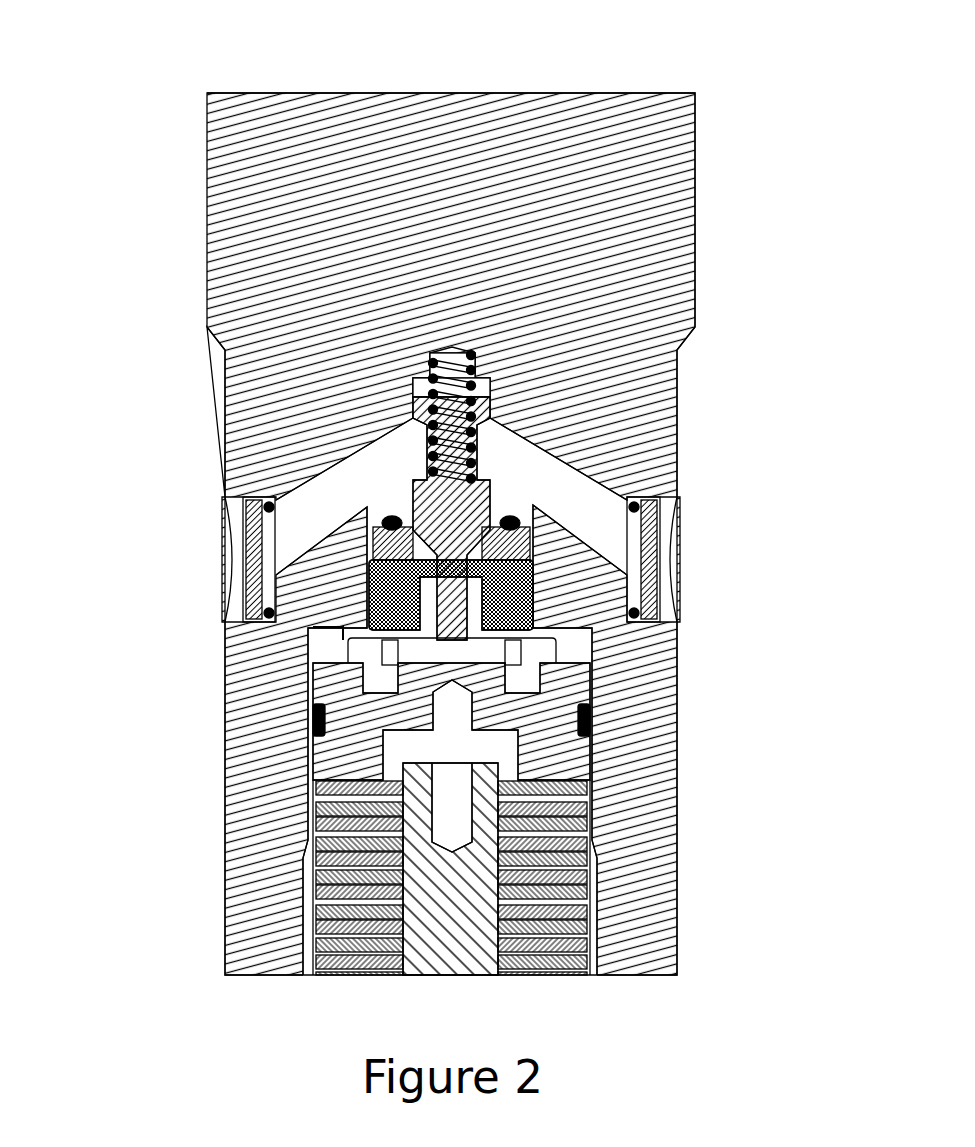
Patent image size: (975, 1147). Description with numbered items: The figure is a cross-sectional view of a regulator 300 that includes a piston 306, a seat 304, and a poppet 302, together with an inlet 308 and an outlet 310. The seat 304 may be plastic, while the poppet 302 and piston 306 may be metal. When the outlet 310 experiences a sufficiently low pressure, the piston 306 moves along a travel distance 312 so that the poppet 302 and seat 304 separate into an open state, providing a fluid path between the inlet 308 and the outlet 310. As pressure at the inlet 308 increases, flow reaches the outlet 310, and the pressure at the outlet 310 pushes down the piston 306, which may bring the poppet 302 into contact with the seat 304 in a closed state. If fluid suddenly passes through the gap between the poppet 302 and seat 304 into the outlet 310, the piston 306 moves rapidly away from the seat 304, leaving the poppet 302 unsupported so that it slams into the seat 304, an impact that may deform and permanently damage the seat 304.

The regulator 300 is at (146, 176).
The poppet 302 is at (460, 497).
The seat 304 is at (520, 540).
The piston 306 is at (550, 706).
The inlet 308 is at (268, 550).
The outlet 310 is at (572, 650).
The travel distance 312 is at (343, 628).